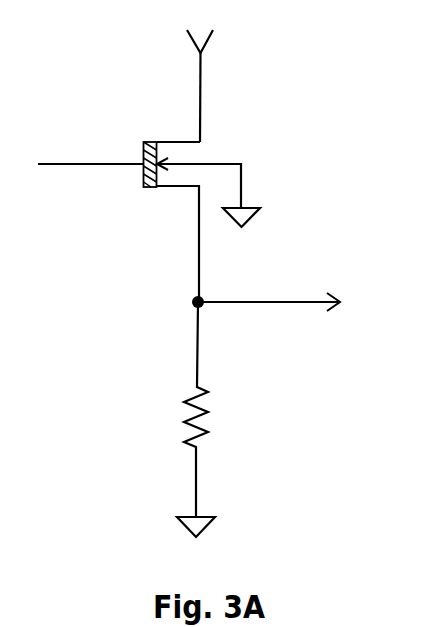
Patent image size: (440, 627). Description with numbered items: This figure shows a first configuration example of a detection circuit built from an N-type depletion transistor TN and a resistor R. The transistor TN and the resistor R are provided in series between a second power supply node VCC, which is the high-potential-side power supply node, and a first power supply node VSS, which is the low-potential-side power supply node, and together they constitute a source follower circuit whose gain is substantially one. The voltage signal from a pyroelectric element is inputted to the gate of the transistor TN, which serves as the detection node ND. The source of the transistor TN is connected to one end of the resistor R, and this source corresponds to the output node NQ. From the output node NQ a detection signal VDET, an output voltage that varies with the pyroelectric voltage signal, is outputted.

The second power supply node VCC is at (225, 86).
The N-type depletion transistor TN is at (182, 222).
The detection node ND is at (91, 175).
The output node NQ is at (214, 290).
The detection signal VDET is at (299, 302).
The resistor R is at (205, 409).
The first power supply node VSS is at (238, 380).